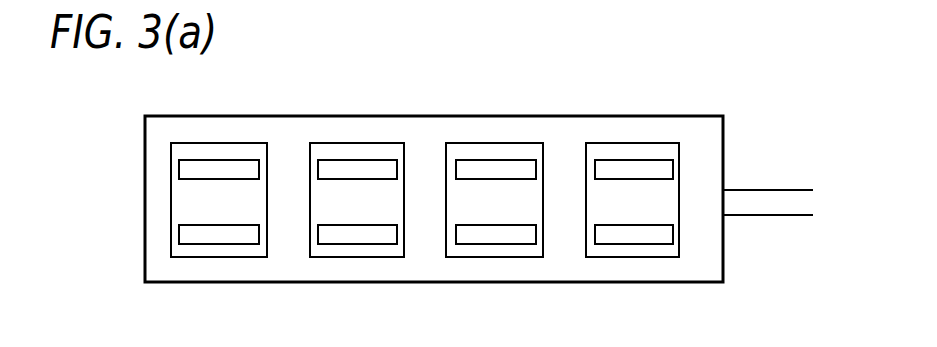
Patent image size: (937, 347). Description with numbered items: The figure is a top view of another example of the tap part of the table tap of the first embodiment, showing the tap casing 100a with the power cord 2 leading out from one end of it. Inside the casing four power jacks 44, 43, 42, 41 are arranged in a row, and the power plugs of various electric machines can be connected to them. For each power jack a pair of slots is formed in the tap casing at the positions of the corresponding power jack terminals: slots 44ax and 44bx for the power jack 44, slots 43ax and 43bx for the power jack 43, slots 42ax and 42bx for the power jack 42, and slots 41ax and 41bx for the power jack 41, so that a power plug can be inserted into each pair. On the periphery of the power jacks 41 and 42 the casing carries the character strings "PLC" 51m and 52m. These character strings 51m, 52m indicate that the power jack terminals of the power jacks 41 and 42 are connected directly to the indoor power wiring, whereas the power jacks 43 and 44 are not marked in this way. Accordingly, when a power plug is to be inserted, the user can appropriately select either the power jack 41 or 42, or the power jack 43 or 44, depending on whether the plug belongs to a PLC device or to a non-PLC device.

The cassette / device body 100a is at (720, 116).
The power cord 2 is at (772, 200).
The power jack 44 is at (244, 143).
The power jack 43 is at (383, 143).
The power jack 42 is at (520, 143).
The power jack 41 is at (657, 143).
The slot 44ax is at (207, 166).
The slot 43ax is at (335, 166).
The slot 42ax is at (469, 168).
The slot 41ax is at (610, 168).
The slot 44bx is at (208, 233).
The slot 43bx is at (338, 233).
The slot 42bx is at (477, 236).
The slot 41bx is at (618, 236).
The character string "PLC" 52m is at (558, 224).
The character string "PLC" 51m is at (697, 224).